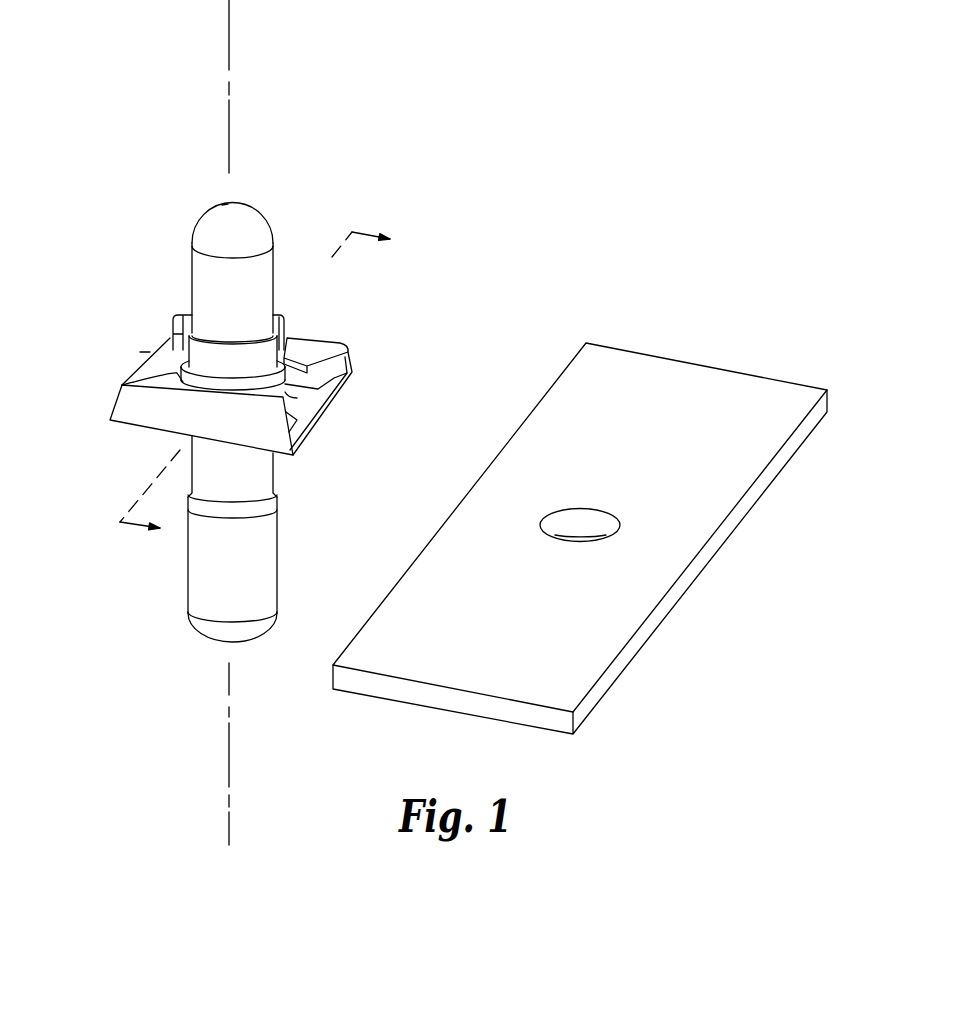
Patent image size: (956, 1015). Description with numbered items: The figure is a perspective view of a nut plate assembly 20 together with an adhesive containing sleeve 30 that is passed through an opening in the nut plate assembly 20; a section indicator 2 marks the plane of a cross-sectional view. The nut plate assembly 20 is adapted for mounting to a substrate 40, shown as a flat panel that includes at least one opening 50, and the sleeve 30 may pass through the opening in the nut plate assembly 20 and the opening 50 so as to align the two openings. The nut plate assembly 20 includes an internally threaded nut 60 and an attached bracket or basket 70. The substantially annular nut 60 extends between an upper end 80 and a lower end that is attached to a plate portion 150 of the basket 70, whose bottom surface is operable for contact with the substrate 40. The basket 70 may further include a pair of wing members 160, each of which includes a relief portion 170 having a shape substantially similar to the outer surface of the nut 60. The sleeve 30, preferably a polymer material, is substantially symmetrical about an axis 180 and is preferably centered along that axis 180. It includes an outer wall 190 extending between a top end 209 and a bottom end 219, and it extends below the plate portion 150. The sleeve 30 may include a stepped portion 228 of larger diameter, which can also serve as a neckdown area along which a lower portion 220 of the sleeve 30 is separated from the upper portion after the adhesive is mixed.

The section line of FIG. 2 is at (240, 376).
The nut plate assembly 20 is at (266, 431).
The adhesive containing sleeve 30 is at (267, 245).
The substrate 40 is at (580, 521).
The opening 50 is at (584, 525).
The internally threaded nut 60 is at (226, 379).
The basket 70 is at (140, 352).
The upper end 80 is at (188, 316).
The plate portion 150 is at (301, 432).
The wing members 160 is at (140, 379).
The relief portion 170 is at (180, 362).
The axis 180 is at (229, 37).
The outer wall 190 is at (262, 571).
The top end 209 is at (220, 218).
The bottom end 219 is at (232, 645).
The lower portion 220 is at (233, 431).
The stepped portion 228 is at (277, 495).